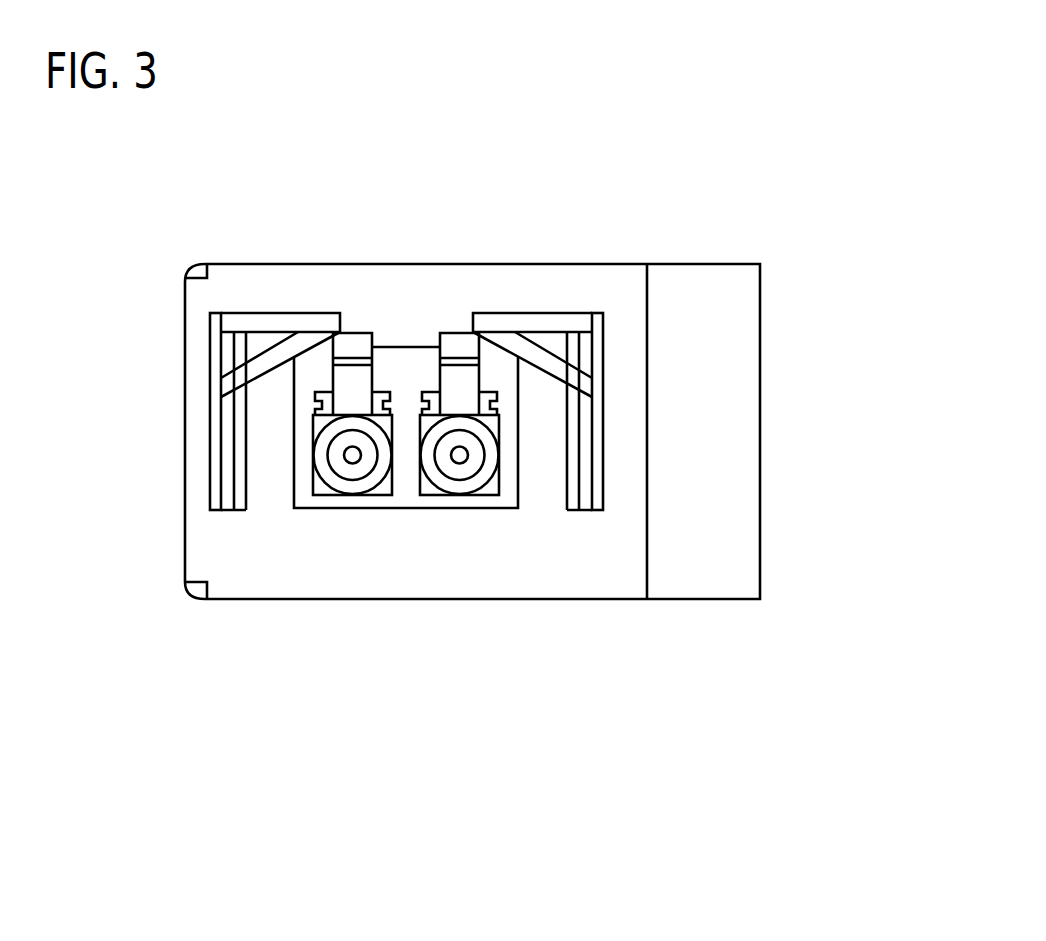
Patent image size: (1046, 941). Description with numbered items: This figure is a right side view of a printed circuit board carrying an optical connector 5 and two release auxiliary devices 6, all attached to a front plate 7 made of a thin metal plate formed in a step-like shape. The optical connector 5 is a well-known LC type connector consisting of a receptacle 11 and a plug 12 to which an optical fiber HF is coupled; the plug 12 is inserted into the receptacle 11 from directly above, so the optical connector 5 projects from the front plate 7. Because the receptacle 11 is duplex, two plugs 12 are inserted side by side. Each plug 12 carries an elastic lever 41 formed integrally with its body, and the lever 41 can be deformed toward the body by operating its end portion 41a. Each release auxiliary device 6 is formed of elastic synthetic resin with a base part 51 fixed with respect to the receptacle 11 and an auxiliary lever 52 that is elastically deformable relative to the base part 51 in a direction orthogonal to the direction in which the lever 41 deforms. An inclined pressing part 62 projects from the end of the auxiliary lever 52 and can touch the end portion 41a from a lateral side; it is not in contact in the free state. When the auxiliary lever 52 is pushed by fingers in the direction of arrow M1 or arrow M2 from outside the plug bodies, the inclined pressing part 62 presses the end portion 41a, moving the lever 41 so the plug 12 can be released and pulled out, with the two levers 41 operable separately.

The optical connector 5 is at (432, 460).
The release auxiliary device 6 is at (432, 314).
The front plate 7 is at (760, 341).
The receptacle 11 is at (503, 498).
The plug 12 is at (285, 429).
The lever 41 is at (352, 376).
The end portion 41a is at (350, 347).
The base part 51 is at (210, 373).
The auxiliary lever 52 is at (230, 345).
The inclined pressing part 62 is at (316, 322).
The optical fiber HF is at (352, 455).
The arrow M1 is at (128, 434).
The arrow M2 is at (810, 415).